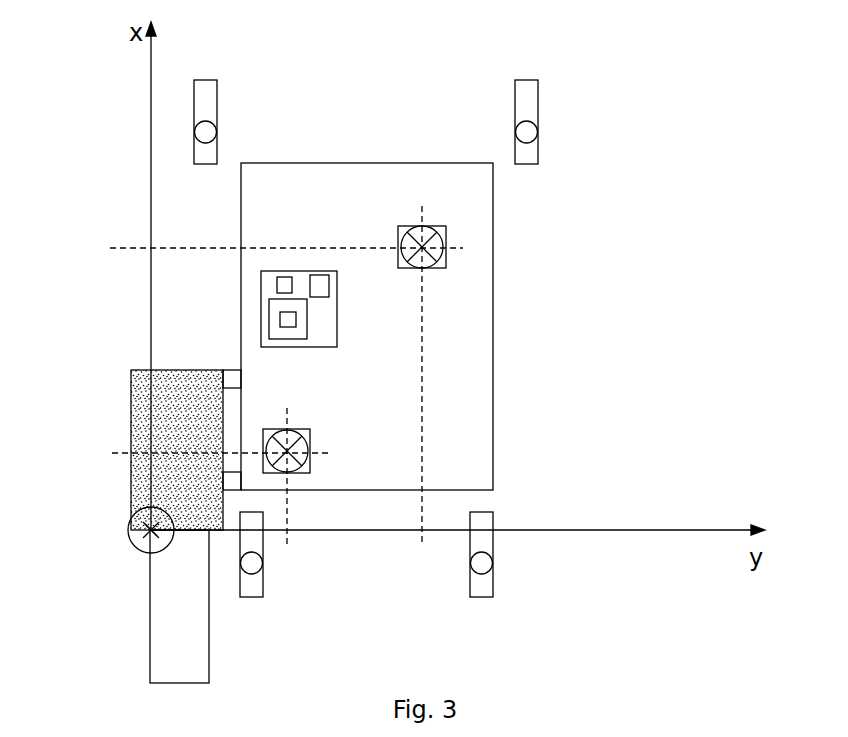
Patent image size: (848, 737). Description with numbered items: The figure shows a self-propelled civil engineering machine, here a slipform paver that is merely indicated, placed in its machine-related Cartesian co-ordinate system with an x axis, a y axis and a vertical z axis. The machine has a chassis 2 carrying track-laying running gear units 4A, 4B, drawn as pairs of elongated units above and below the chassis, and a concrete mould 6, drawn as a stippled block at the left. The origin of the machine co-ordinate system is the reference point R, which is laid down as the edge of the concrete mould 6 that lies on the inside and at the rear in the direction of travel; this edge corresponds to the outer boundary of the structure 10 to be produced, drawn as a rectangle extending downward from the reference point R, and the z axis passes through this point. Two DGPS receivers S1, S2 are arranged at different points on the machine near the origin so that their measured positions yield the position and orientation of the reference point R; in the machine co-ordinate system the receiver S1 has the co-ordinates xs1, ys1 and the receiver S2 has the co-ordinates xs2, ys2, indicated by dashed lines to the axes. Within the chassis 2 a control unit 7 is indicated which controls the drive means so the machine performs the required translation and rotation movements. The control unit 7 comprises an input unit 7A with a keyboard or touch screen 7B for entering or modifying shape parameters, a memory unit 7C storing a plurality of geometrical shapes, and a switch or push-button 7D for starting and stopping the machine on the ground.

The chassis 2 is at (366, 163).
The track-laying running gear units 4A is at (207, 80).
The track-laying running gear units 4B is at (253, 597).
The concrete mould 6 is at (185, 370).
The control unit 7 is at (338, 322).
The input unit 7A is at (300, 340).
The keyboard or touch screen 7B is at (285, 333).
The memory unit 7C is at (330, 285).
The switch or push-button 7D is at (283, 277).
The structure 10 is at (150, 633).
The DGPS receiver S1 is at (303, 447).
The DGPS receiver S2 is at (405, 240).
The reference point R is at (128, 530).
The z axis z is at (143, 540).
The x co-ordinate of DGPS receiver S1 xs1 is at (197, 454).
The x co-ordinate of DGPS receiver S2 xs2 is at (264, 249).
The y co-ordinate of DGPS receiver S1 ys1 is at (290, 494).
The y co-ordinate of DGPS receiver S2 ys2 is at (425, 393).